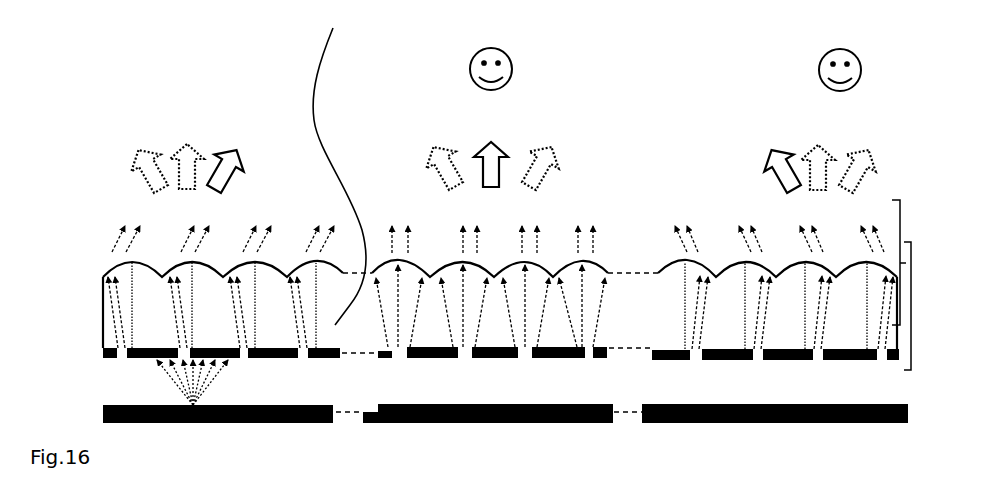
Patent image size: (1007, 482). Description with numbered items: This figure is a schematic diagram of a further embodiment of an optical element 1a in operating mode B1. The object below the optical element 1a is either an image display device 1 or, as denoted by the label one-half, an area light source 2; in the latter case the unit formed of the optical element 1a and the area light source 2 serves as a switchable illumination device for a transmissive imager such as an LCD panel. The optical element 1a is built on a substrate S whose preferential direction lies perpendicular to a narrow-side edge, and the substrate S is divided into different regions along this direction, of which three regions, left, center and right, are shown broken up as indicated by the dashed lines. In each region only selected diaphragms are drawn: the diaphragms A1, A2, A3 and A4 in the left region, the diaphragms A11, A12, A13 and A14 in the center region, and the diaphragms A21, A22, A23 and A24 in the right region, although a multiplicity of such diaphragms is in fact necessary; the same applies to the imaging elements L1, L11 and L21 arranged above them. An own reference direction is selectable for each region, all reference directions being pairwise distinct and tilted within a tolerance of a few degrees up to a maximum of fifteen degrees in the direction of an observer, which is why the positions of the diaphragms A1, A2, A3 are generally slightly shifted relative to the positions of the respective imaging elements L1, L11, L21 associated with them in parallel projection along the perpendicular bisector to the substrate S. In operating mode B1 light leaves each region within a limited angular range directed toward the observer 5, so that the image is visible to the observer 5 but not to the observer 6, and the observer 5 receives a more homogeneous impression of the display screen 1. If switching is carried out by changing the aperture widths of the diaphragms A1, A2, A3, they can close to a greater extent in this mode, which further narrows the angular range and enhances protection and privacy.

The substrate S is at (339, 165).
The observer 5 is at (491, 47).
The observer 6 is at (840, 48).
The imaging element L1 is at (100, 270).
The imaging element L11 is at (380, 265).
The imaging element L21 is at (672, 257).
The optical element 1a is at (910, 305).
The diaphragm A1 is at (120, 359).
The diaphragm A2 is at (236, 362).
The diaphragm A3 is at (243, 359).
The diaphragm A4 is at (302, 359).
The diaphragm A11 is at (397, 359).
The diaphragm A12 is at (462, 359).
The diaphragm A13 is at (526, 359).
The diaphragm A14 is at (588, 359).
The diaphragm A21 is at (696, 361).
The diaphragm A22 is at (759, 361).
The diaphragm A23 is at (819, 361).
The diaphragm A24 is at (880, 361).
The image display device 1 is at (470, 414).
The area light source 2 is at (470, 414).